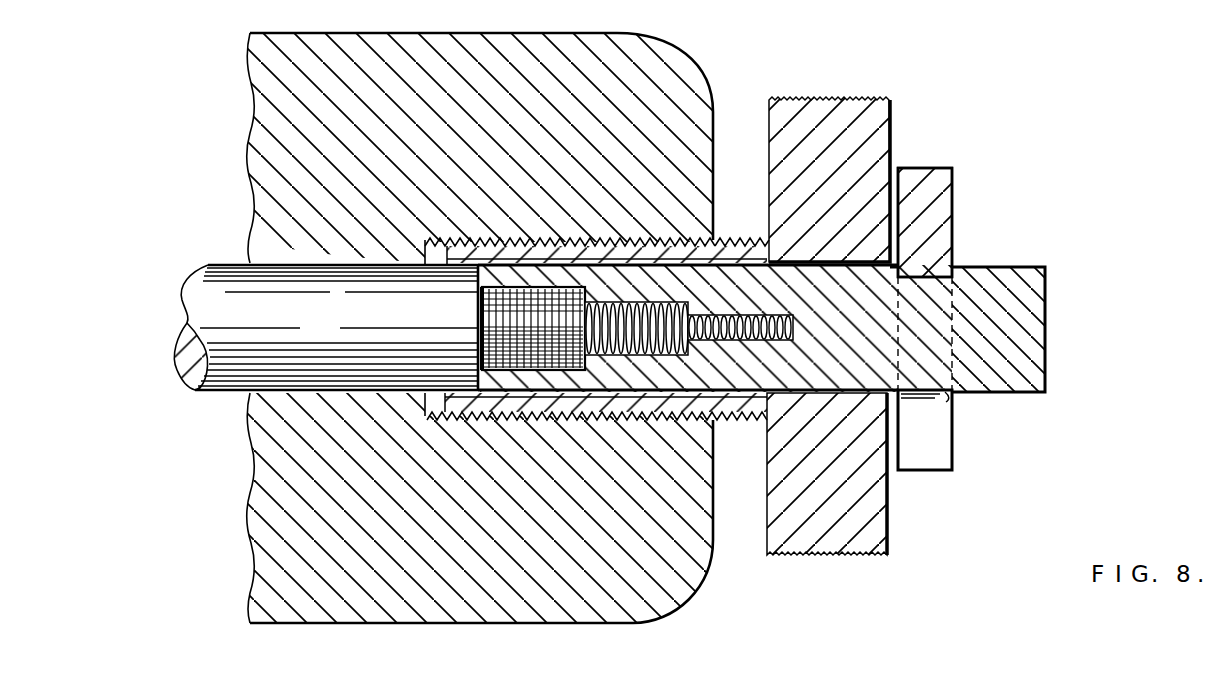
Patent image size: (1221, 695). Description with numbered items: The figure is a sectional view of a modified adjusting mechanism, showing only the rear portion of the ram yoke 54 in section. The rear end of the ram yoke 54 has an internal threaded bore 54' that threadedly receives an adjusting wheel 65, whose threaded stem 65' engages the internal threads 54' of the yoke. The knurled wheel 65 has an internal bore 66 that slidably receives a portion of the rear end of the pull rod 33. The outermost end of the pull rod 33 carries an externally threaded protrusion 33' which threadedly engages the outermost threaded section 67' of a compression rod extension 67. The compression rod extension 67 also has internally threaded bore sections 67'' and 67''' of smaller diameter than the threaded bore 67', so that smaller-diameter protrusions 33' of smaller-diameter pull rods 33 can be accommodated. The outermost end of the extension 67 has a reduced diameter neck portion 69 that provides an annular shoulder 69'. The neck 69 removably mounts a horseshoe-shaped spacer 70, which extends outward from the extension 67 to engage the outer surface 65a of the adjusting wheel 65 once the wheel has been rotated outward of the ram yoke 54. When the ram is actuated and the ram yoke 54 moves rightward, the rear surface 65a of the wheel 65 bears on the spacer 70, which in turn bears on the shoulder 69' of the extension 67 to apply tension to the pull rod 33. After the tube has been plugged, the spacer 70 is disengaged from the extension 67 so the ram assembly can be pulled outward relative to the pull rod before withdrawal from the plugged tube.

The pull rod 33 is at (307, 327).
The externally threaded protrusion 33' is at (509, 376).
The ram yoke 54 is at (481, 341).
The internal threaded bore 54' is at (570, 207).
The adjusting wheel 65 is at (828, 306).
The threaded stem 65' is at (742, 207).
The outer surface of the adjusting wheel 65a is at (902, 207).
The internal bore 66 is at (684, 383).
The compression rod extension 67 is at (715, 366).
The outermost threaded section 67' is at (606, 290).
The internally threaded bore section 67'' is at (630, 384).
The internally threaded bore section 67''' is at (740, 390).
The reduced diameter neck portion 69 is at (971, 307).
The annular shoulder 69' is at (954, 430).
The horseshoe-shaped spacer 70 is at (940, 208).